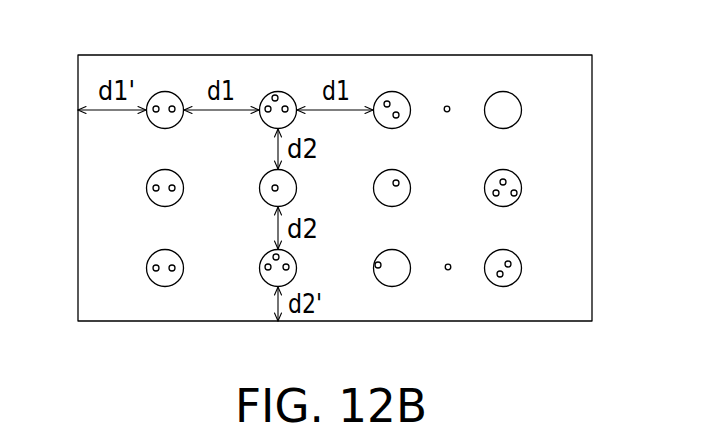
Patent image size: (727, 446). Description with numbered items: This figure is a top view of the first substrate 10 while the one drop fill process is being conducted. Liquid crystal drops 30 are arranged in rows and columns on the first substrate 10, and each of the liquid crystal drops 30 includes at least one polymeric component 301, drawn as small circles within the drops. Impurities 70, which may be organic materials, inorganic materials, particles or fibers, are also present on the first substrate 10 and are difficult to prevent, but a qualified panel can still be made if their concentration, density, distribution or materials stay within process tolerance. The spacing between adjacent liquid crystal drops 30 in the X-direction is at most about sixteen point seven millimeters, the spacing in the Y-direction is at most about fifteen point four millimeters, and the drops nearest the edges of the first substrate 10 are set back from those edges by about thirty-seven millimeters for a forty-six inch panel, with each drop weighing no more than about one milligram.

The first substrate 10 is at (585, 301).
The liquid crystal drop 30 is at (518, 108).
The polymeric component 301 is at (172, 106).
The impurity 70 is at (447, 106).